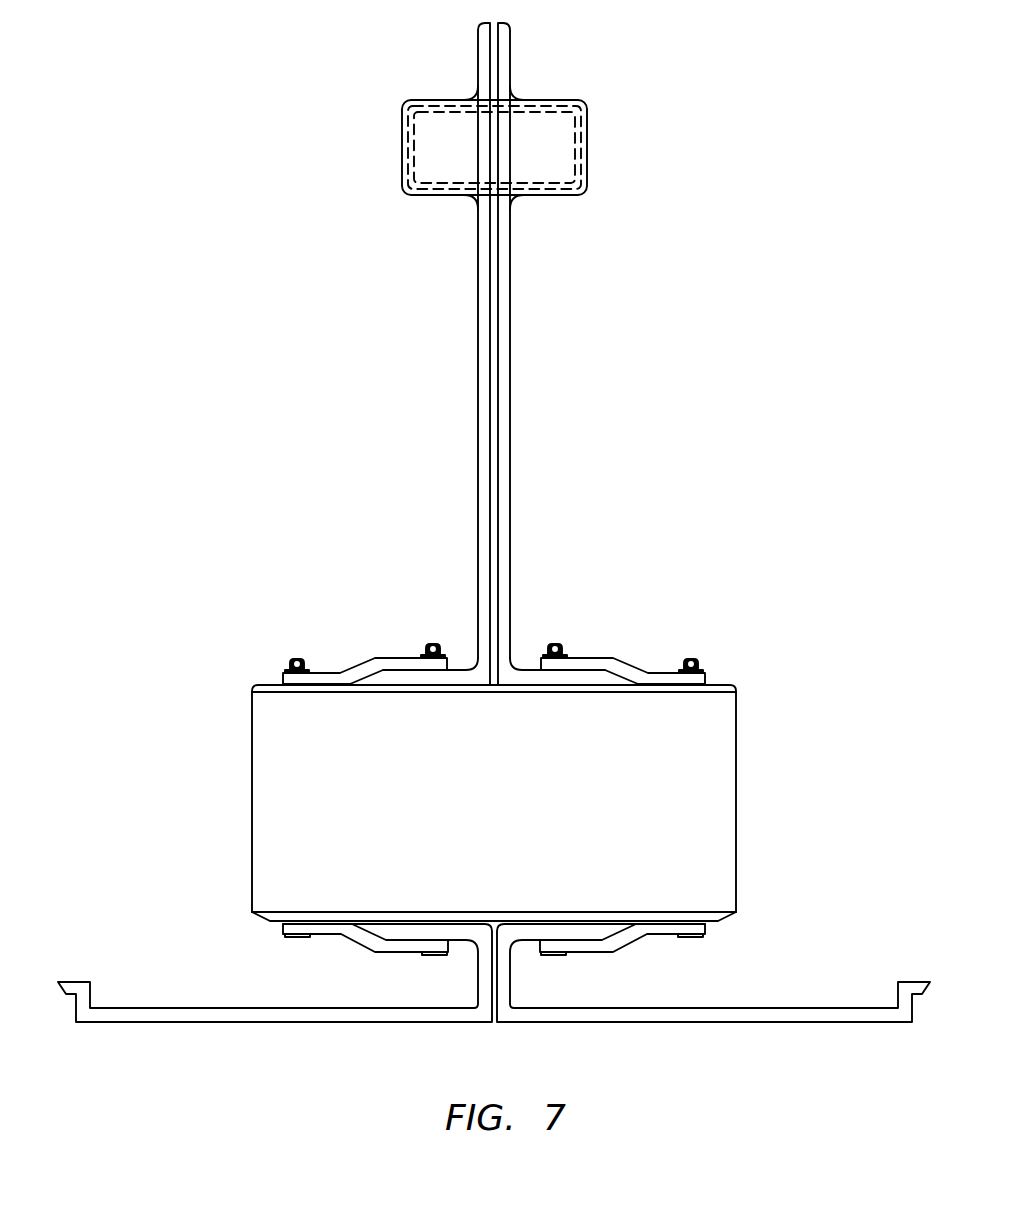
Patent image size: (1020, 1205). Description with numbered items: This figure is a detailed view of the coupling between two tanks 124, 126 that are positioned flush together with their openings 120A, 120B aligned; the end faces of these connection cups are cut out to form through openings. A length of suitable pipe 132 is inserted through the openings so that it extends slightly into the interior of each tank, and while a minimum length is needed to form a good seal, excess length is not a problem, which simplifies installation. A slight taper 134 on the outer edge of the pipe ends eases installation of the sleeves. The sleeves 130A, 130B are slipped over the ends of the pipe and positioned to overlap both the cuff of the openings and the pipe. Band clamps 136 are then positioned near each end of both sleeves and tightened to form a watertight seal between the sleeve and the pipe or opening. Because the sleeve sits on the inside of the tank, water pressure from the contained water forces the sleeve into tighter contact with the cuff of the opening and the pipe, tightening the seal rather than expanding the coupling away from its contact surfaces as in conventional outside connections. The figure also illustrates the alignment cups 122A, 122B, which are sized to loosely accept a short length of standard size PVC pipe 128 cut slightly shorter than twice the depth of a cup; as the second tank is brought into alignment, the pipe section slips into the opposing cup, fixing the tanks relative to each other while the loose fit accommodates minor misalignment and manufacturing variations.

The opening 120A is at (400, 553).
The opening 120B is at (583, 553).
The alignment cup 122A is at (384, 203).
The alignment cup 122B is at (612, 185).
The tank 124 is at (589, 353).
The tank 126 is at (406, 353).
The PVC pipe 128 is at (564, 137).
The sleeve 130A is at (293, 614).
The sleeve 130B is at (709, 608).
The pipe 132 is at (564, 798).
The taper 134 is at (549, 941).
The band clamps 136 is at (476, 732).